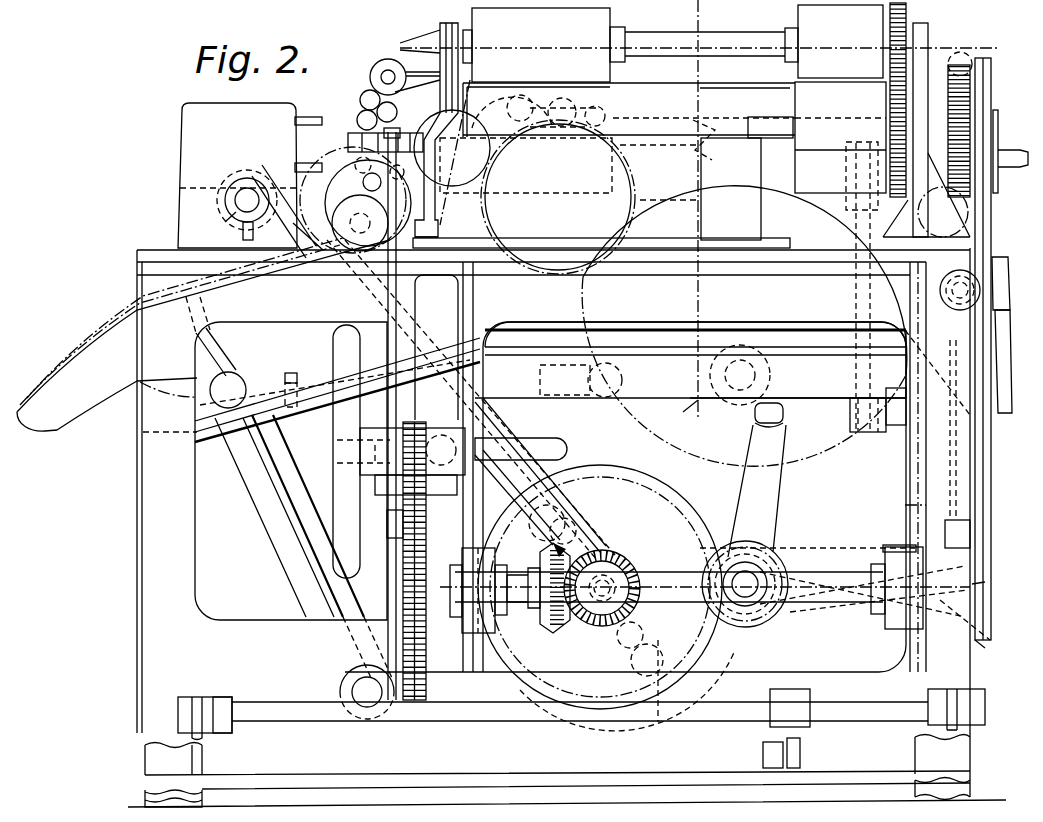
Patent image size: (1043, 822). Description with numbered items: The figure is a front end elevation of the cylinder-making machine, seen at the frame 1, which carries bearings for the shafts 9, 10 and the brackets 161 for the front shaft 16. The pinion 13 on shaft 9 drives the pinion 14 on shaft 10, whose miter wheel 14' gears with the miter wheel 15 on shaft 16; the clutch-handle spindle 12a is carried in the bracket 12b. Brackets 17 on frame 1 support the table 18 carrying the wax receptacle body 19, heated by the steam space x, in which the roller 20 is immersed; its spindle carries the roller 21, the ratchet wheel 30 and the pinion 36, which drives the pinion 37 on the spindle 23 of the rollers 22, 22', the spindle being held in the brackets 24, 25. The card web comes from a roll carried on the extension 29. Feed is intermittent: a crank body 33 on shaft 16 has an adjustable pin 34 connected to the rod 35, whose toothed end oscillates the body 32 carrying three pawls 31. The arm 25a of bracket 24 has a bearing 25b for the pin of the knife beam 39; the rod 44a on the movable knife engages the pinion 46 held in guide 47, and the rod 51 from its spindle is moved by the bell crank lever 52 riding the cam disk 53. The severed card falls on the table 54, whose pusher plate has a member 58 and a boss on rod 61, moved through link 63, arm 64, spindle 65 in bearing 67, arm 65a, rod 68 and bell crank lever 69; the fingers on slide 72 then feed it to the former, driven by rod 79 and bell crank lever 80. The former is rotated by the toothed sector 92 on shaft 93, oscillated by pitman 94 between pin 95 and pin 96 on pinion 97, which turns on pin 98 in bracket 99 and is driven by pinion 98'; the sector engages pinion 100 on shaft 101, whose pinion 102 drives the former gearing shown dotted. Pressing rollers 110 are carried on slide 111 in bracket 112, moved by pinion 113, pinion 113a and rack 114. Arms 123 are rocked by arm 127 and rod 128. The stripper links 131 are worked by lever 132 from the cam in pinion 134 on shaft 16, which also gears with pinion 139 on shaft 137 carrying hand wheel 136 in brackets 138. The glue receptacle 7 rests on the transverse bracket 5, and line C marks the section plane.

The frame 1 is at (553, 527).
The transverse bearer or bracket 5 is at (792, 387).
The glue receptacle 7 is at (760, 330).
The shaft 9 is at (768, 566).
The shaft 10 is at (590, 618).
The spindle 12a is at (436, 721).
The bracket 12b is at (205, 696).
The pinion 13 is at (808, 563).
The pinion 14 is at (600, 587).
The miter wheel 14' is at (600, 587).
The second miter wheel 15 is at (549, 622).
The shaft 16 is at (705, 587).
The brackets 17 is at (695, 314).
The table 18 is at (740, 252).
The rectangular box-like body 19 is at (660, 160).
The roller 20 is at (629, 110).
The second roller 21 is at (840, 137).
The roller 22 is at (834, 41).
The second roller 22' is at (544, 45).
The spindle 23 is at (735, 40).
The bracket 24 is at (442, 121).
The bracket 25 is at (929, 38).
The arm 25a is at (411, 40).
The bearing 25b is at (389, 77).
The extension 29 is at (560, 778).
The ratchet wheel 30 is at (972, 106).
The pawls 31 is at (968, 60).
The body 32 is at (991, 78).
The body 33 is at (993, 578).
The pin 34 is at (987, 650).
The rod 35 is at (991, 464).
The pinion 36 is at (970, 208).
The second pinion 37 is at (909, 98).
The beam or bar 39 is at (745, 77).
The rod 44a is at (1006, 368).
The pinion 46 is at (985, 300).
The guide 47 is at (1006, 273).
The rod 51 is at (970, 510).
The bell crank lever 52 is at (665, 712).
The disk 53 is at (690, 692).
The table 54 is at (700, 135).
The member 58 is at (508, 112).
The rod 61 is at (670, 187).
The link 63 is at (747, 178).
The arm 64 is at (840, 167).
The spindle 65 is at (863, 366).
The second arm 65a is at (872, 432).
The bearing 67 is at (848, 200).
The rod 68 is at (786, 412).
The bell crank lever 69 is at (757, 491).
The slide 72 is at (1005, 158).
The rod 79 is at (904, 507).
The bell crank lever 80 is at (881, 545).
The toothed sector 92 is at (248, 459).
The shaft 93 is at (372, 680).
The pitman 94 is at (290, 373).
The pin 95 is at (232, 380).
The pin 96 is at (581, 380).
The pinion 97 is at (588, 444).
The pin 98 is at (680, 414).
The second pinion 98' is at (754, 599).
The bracket 99 is at (733, 395).
The pinion 100 is at (444, 467).
The shaft 101 is at (350, 192).
The second pinion 102 is at (441, 232).
The rollers 110 is at (338, 150).
The slide 111 is at (310, 155).
The bracket 112 is at (237, 175).
The pinion 113 is at (250, 182).
The second pinion 113a is at (213, 223).
The rack 114 is at (255, 228).
The arms 123 is at (526, 139).
The arm 127 is at (403, 414).
The rod 128 is at (492, 410).
The links 131 is at (376, 134).
The lever 132 is at (390, 512).
The pinion 134 is at (424, 548).
The hand wheel 136 is at (347, 453).
The shaft 137 is at (521, 449).
The brackets 138 is at (440, 450).
The pinion 139 is at (360, 433).
The brackets 161 is at (707, 590).
The section line C is at (706, 215).
The steam jacket or space x is at (558, 197).